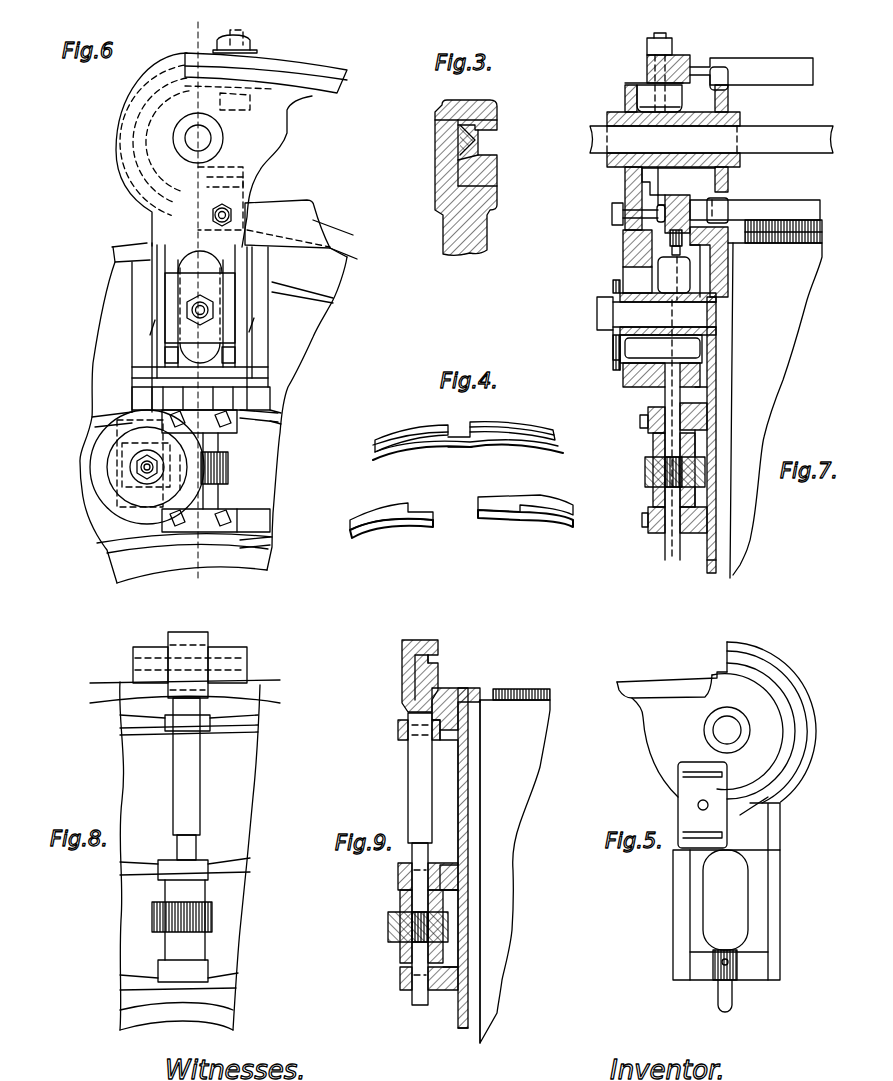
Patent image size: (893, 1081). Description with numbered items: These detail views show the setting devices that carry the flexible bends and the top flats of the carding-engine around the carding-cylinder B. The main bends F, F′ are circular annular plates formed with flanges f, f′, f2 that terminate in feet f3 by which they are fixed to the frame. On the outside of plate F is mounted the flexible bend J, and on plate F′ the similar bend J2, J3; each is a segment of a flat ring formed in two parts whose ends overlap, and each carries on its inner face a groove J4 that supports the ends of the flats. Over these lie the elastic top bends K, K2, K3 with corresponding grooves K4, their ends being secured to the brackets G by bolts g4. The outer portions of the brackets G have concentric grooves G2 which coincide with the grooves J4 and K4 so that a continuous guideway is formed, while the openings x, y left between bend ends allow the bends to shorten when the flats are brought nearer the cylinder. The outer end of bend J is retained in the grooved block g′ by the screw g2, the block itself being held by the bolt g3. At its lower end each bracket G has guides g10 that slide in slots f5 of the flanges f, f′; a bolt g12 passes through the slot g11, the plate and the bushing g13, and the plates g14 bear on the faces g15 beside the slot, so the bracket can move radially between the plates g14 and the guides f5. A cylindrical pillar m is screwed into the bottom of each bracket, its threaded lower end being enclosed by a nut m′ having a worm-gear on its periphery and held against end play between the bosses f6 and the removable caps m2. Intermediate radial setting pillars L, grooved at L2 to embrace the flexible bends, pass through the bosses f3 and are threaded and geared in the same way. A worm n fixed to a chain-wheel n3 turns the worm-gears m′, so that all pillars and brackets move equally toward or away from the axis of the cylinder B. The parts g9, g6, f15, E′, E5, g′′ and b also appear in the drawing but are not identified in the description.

In FIG. 6, the opening x is at (196, 298).
In FIG. 6, the bracket G is at (214, 150).
In FIG. 5, the bracket G is at (700, 743).
In FIG. 6, the concentric grooves G2 is at (132, 135).
In FIG. 5, the concentric grooves G2 is at (780, 682).
In FIG. 6, the hub bore / shaft g9 is at (188, 133).
In FIG. 7, the hub bore / shaft g9 is at (711, 139).
In FIG. 6, the hub g6 is at (187, 155).
In FIG. 5, the hub g6 is at (744, 738).
In FIG. 6, the grooves K4 is at (283, 70).
In FIG. 4, the grooves K4 is at (398, 445).
In FIG. 6, the top bend K is at (273, 95).
In FIG. 7, the top bend K is at (645, 66).
In FIG. 6, the bolts g4 is at (250, 44).
In FIG. 7, the bolts g4 is at (670, 47).
In FIG. 6, the grooves J4 is at (301, 229).
In FIG. 3, the grooves J4 is at (479, 142).
In FIG. 4, the grooves J4 is at (375, 520).
In FIG. 9, the grooves J4 is at (438, 668).
In FIG. 6, the main bend F′ is at (213, 413).
In FIG. 7, the main bend F′ is at (716, 348).
In FIG. 8, the main bend F′ is at (185, 855).
In FIG. 9, the main bend F′ is at (456, 858).
In FIG. 6, the lips or guides g10 is at (158, 290).
In FIG. 7, the lips or guides g10 is at (600, 360).
In FIG. 5, the lips or guides g10 is at (683, 912).
In FIG. 6, the slot g11 is at (200, 307).
In FIG. 6, the plates g14 is at (192, 315).
In FIG. 7, the plates g14 is at (612, 338).
In FIG. 6, the bolt g12 is at (203, 298).
In FIG. 7, the bolt g12 is at (649, 313).
In FIG. 6, the surfaces g15 is at (202, 354).
In FIG. 6, the frame guide ribs f15 is at (202, 331).
In FIG. 6, the flange f is at (310, 276).
In FIG. 8, the flange f is at (189, 724).
In FIG. 6, the cylindrical pillar m is at (201, 398).
In FIG. 7, the cylindrical pillar m is at (661, 430).
In FIG. 5, the cylindrical pillar m is at (735, 981).
In FIG. 6, the removable caps m2 is at (216, 471).
In FIG. 7, the removable caps m2 is at (639, 464).
In FIG. 6, the nut m′ is at (222, 443).
In FIG. 7, the nut m′ is at (652, 452).
In FIG. 8, the nut m′ is at (182, 920).
In FIG. 9, the nut m′ is at (400, 905).
In FIG. 6, the bosses f6 is at (243, 408).
In FIG. 7, the bosses f6 is at (709, 418).
In FIG. 6, the chain-wheel n3 is at (108, 497).
In FIG. 6, the worm n is at (147, 463).
In FIG. 3, the setting pillar L is at (466, 177).
In FIG. 8, the setting pillar L is at (186, 779).
In FIG. 9, the setting pillar L is at (420, 859).
In FIG. 3, the groove L2 is at (466, 143).
In FIG. 9, the groove L2 is at (403, 673).
In FIG. 4, the top bend K3 is at (410, 435).
In FIG. 4, the top bend K2 is at (512, 423).
In FIG. 4, the opening y is at (468, 443).
In FIG. 4, the flexible bend J3 is at (391, 537).
In FIG. 4, the flexible bend J2 is at (525, 525).
In FIG. 7, the carding-cylinder B is at (775, 399).
In FIG. 9, the carding-cylinder B is at (515, 871).
In FIG. 7, the arm E′ is at (751, 74).
In FIG. 7, the arm E5 is at (755, 210).
In FIG. 7, the flexible bend J is at (677, 214).
In FIG. 8, the flexible bend J is at (190, 665).
In FIG. 7, the grooved block g′ is at (667, 195).
In FIG. 7, the bolt g3 is at (625, 214).
In FIG. 7, the screw g2 is at (683, 255).
In FIG. 7, the slide g′′ is at (650, 278).
In FIG. 5, the slide g′′ is at (713, 856).
In FIG. 7, the slots f5 is at (716, 300).
In FIG. 7, the bushing g13 is at (614, 295).
In FIG. 7, the main bend F is at (708, 497).
In FIG. 8, the main bend F is at (176, 976).
In FIG. 9, the main bend F is at (468, 935).
In FIG. 8, the feet or bosses f3 is at (184, 848).
In FIG. 9, the feet or bosses f3 is at (398, 730).
In FIG. 8, the flange f′ is at (185, 861).
In FIG. 8, the flange f2 is at (179, 979).
In FIG. 9, the bed surface b is at (521, 685).